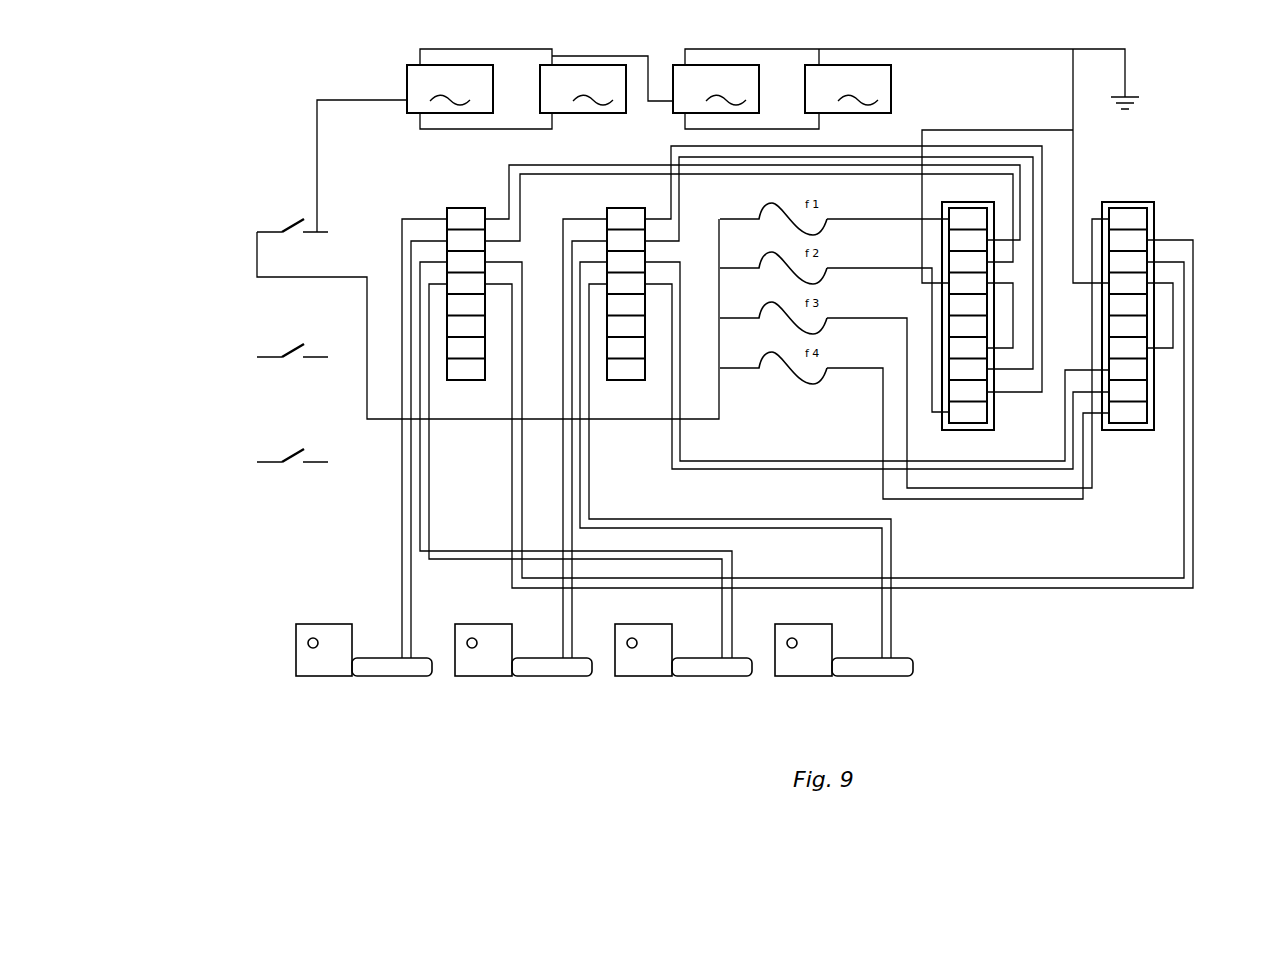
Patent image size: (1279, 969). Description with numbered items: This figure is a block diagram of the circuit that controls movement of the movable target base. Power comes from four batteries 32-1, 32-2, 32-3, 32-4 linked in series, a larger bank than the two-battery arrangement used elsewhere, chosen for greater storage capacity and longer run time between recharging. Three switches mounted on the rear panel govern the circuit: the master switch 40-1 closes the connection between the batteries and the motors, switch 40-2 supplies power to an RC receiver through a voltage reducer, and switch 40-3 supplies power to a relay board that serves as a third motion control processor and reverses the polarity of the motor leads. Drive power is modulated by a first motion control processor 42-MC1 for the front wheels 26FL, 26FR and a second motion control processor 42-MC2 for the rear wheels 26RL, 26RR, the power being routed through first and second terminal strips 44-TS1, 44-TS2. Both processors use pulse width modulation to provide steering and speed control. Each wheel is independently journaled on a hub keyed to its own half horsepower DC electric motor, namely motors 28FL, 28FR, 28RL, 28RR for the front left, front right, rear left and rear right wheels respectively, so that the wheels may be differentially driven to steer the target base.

The battery 32-1 is at (450, 89).
The battery 32-2 is at (583, 89).
The battery 32-3 is at (716, 89).
The battery 32-4 is at (848, 89).
The master switch 40-1 is at (287, 221).
The switch 40-2 is at (287, 346).
The switch 40-3 is at (287, 451).
The first terminal strip 44-TS1 is at (466, 208).
The second terminal strip 44-TS2 is at (630, 208).
The first motion control processor 42-MC1 is at (968, 202).
The second motion control processor 42-MC2 is at (1127, 202).
The front left wheel 26FL is at (322, 676).
The front left electric motor 28FL is at (393, 676).
The front right wheel 26FR is at (482, 676).
The front right electric motor 28FR is at (550, 676).
The rear left wheel 26RL is at (642, 676).
The rear left electric motor 28RL is at (712, 676).
The rear right wheel 26RR is at (802, 676).
The rear right electric motor 28RR is at (875, 676).